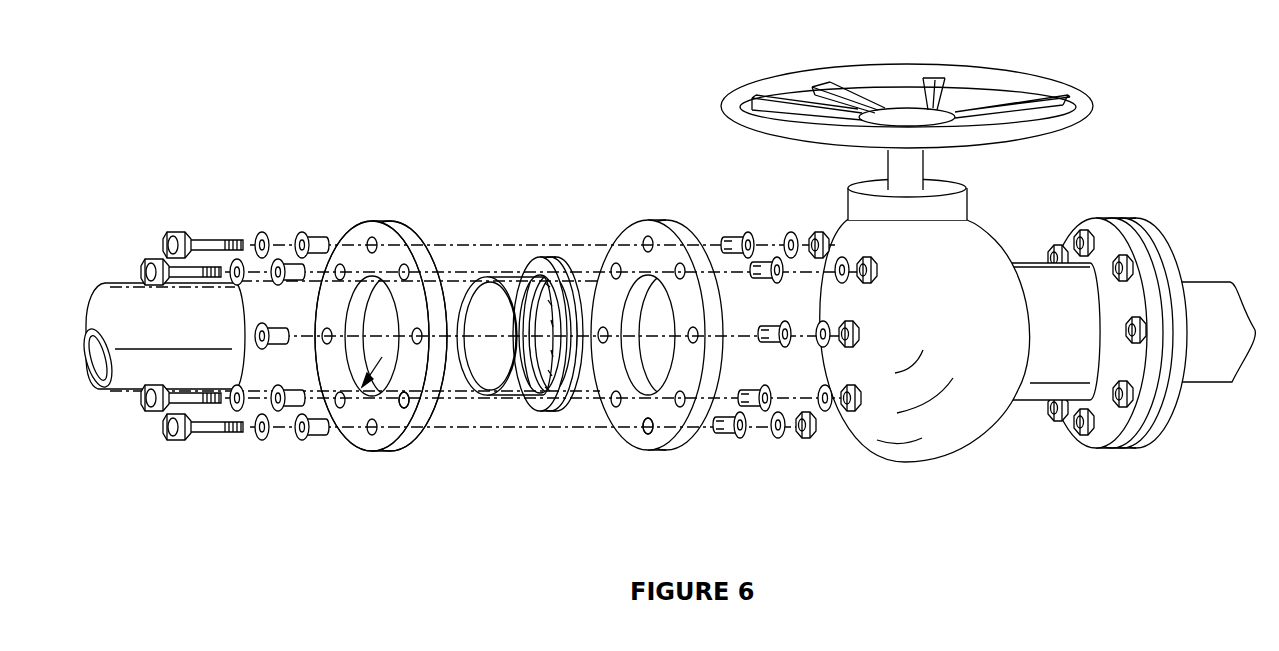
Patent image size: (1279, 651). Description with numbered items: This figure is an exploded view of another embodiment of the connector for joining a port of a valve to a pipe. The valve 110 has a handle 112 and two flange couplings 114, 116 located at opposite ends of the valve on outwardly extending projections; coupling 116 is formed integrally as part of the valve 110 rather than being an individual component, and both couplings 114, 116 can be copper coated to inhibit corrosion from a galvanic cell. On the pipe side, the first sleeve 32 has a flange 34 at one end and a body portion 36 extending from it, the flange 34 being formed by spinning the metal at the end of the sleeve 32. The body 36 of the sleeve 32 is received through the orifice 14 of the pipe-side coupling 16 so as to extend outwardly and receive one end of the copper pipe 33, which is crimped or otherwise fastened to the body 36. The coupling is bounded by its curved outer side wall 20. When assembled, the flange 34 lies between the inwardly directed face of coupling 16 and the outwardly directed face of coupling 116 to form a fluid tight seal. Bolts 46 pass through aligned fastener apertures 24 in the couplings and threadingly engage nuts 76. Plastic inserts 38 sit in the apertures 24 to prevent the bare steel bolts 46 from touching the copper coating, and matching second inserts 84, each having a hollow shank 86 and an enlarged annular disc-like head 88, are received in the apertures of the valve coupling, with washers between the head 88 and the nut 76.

The orifice 14 is at (343, 432).
The first surface 16 is at (381, 446).
The outer side wall 20 is at (407, 232).
The fastener aperture 24 is at (408, 400).
The first sleeve 32 is at (516, 422).
The pipe 33 is at (128, 297).
The flange 34 is at (548, 262).
The body portion 36 is at (512, 288).
The first insert 38 is at (294, 455).
The bolt 46 is at (216, 212).
The nut 76 is at (800, 446).
The second insert 84 is at (745, 450).
The hollow shank 86 is at (735, 238).
The enlarged annular disc-like head 88 is at (748, 233).
The valve 110 is at (917, 480).
The handle 112 is at (978, 73).
The flange coupling 114 is at (1106, 448).
The flange coupling 116 is at (673, 444).